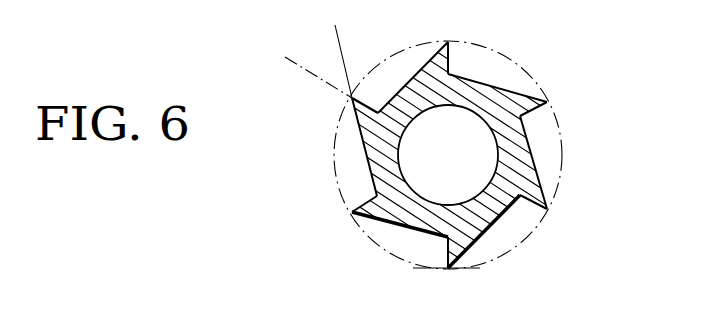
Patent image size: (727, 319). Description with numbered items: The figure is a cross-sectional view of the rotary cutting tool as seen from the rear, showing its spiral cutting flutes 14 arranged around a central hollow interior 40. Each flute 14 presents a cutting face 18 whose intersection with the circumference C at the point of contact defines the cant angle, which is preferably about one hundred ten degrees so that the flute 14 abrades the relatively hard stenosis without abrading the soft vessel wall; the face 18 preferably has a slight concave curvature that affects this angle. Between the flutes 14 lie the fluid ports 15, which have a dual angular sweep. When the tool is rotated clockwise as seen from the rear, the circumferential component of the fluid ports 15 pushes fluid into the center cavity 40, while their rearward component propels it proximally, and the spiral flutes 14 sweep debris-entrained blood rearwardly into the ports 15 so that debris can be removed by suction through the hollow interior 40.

The cutting flute 14 is at (448, 41).
The fluid port 15 is at (389, 99).
The cutting face 18 is at (452, 62).
The hollow interior 40 is at (462, 168).
The circumference C is at (361, 238).